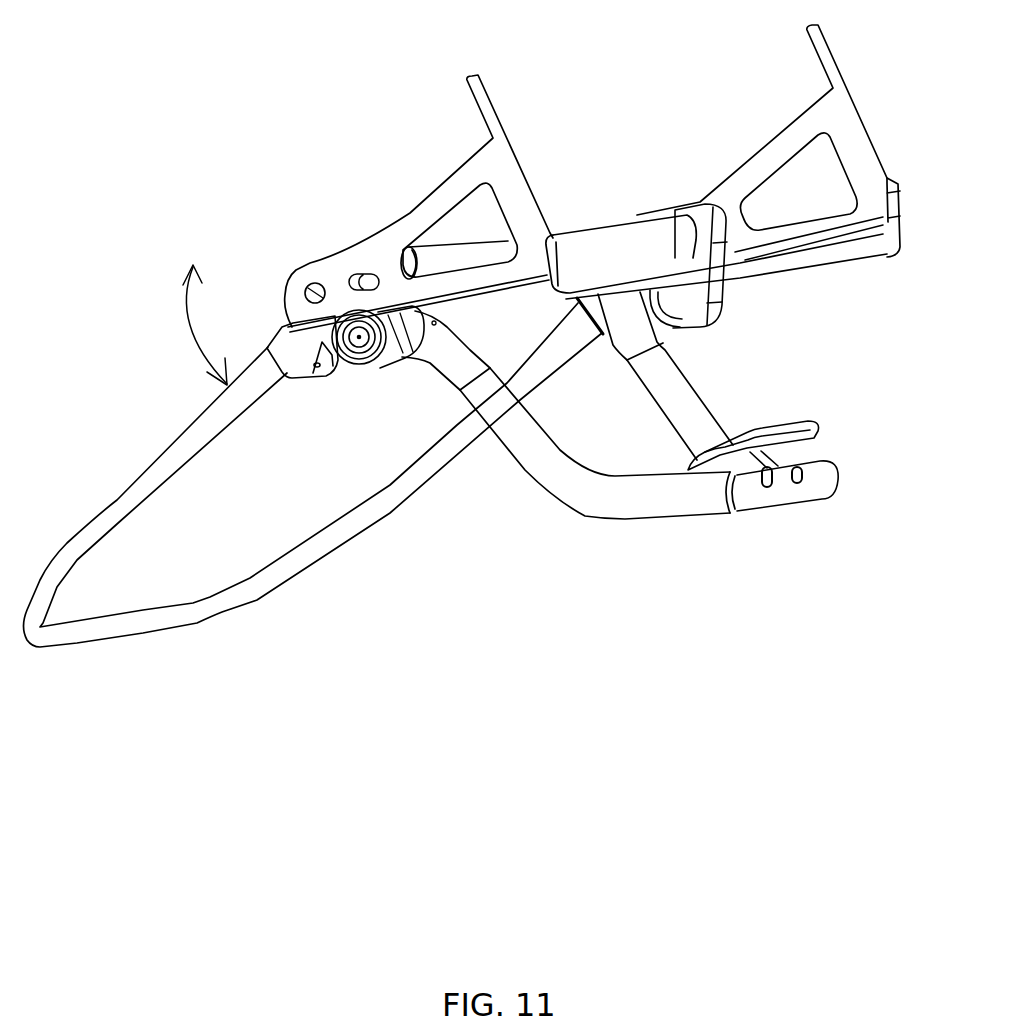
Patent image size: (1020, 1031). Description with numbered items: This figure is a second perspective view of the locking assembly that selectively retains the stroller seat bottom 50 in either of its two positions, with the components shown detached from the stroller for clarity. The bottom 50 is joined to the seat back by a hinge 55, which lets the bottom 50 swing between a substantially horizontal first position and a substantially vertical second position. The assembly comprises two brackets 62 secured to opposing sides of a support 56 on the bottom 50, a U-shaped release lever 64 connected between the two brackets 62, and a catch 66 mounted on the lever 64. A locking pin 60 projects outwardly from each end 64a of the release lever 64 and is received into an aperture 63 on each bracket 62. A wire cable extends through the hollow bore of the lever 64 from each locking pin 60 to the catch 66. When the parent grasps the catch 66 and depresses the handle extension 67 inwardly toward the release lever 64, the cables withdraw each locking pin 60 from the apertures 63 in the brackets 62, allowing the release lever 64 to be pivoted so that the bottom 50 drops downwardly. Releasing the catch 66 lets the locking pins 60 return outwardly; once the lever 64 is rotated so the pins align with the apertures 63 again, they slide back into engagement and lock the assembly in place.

The bottom 50 is at (148, 485).
The hinge 55 is at (598, 248).
The support 56 is at (817, 258).
The locking pin 60 is at (358, 337).
The bracket 62 is at (430, 207).
The aperture 63 is at (308, 288).
The release lever 64 is at (563, 473).
The end of release lever 64a is at (375, 352).
The catch 66 is at (790, 493).
The handle extension 67 is at (813, 421).